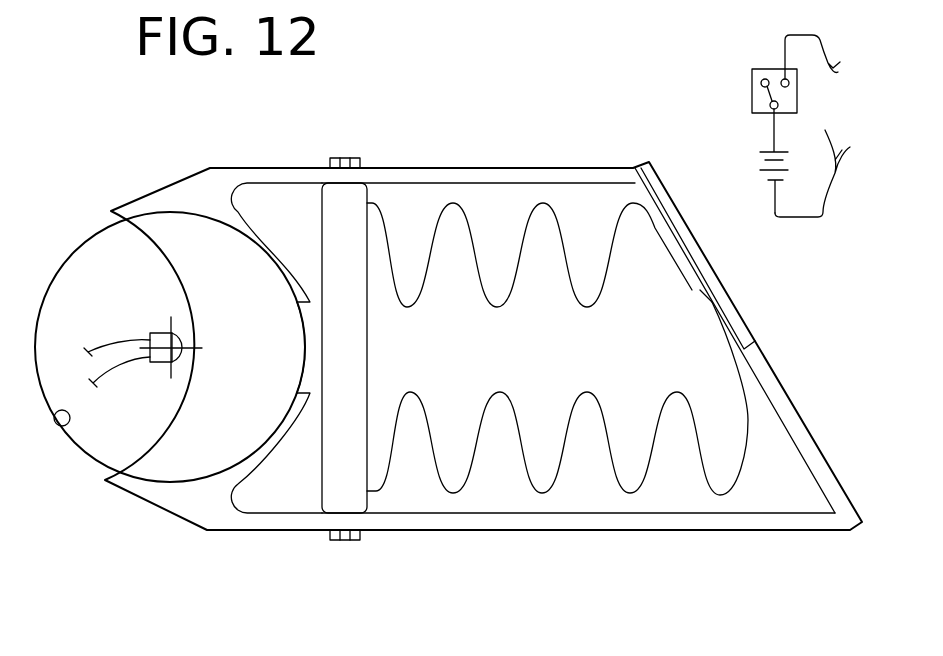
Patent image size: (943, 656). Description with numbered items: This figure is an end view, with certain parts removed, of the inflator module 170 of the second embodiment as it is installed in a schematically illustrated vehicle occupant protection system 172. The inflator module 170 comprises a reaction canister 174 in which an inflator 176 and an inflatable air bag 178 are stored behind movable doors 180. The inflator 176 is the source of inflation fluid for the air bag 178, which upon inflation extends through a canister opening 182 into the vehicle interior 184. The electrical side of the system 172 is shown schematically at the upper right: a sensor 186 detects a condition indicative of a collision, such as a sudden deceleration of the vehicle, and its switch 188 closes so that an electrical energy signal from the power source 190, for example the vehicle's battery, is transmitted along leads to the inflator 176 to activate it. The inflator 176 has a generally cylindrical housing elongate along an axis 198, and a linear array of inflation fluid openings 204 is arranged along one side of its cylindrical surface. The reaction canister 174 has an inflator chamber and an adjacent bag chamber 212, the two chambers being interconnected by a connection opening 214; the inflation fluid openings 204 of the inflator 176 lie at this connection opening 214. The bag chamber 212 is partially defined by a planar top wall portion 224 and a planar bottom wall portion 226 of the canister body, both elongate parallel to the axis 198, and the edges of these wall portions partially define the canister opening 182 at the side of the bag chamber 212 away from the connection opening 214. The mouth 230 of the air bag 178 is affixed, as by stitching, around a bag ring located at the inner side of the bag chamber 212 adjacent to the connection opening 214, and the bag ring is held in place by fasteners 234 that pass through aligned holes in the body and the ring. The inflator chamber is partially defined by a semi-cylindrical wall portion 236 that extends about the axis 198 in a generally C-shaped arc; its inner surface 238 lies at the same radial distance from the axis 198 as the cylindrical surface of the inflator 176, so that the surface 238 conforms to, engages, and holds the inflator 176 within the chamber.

The inflator module 170 is at (190, 542).
The vehicle occupant protection system 172 is at (576, 75).
The reaction canister 174 is at (294, 168).
The inflator 176 is at (148, 442).
The inflatable air bag 178 is at (748, 427).
The movable doors 180 is at (730, 313).
The canister opening 182 is at (810, 478).
The vehicle interior 184 is at (870, 354).
The sensor 186 is at (770, 72).
The switch 188 is at (762, 97).
The power source 190 is at (760, 153).
The axis 198 is at (176, 362).
The inflation fluid openings 204 is at (300, 378).
The bag chamber 212 is at (675, 488).
The connection opening 214 is at (312, 328).
The top wall portion 224 is at (553, 180).
The bottom wall portion 226 is at (521, 520).
The mouth 230 is at (321, 457).
The fasteners 234 is at (340, 541).
The semi-cylindrical wall portion 236 is at (104, 472).
The inner surface 238 is at (62, 428).